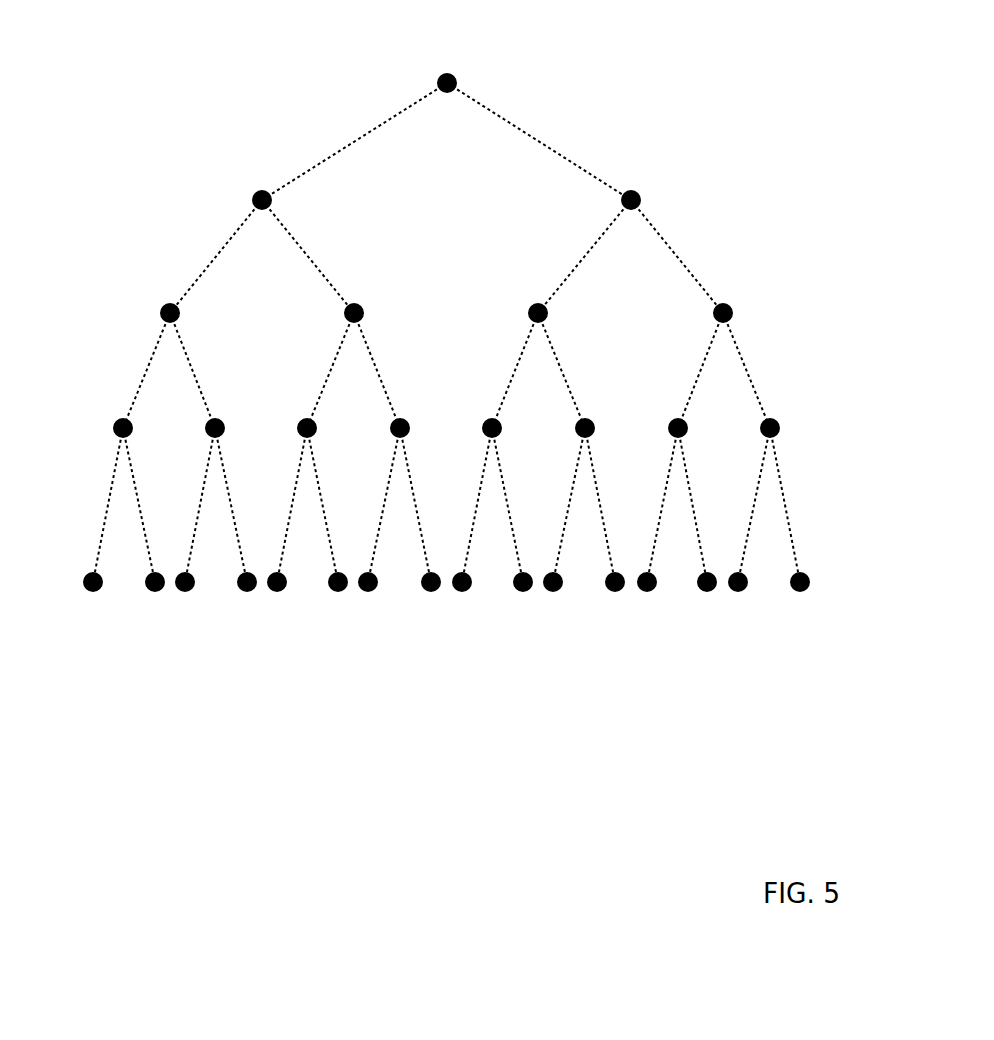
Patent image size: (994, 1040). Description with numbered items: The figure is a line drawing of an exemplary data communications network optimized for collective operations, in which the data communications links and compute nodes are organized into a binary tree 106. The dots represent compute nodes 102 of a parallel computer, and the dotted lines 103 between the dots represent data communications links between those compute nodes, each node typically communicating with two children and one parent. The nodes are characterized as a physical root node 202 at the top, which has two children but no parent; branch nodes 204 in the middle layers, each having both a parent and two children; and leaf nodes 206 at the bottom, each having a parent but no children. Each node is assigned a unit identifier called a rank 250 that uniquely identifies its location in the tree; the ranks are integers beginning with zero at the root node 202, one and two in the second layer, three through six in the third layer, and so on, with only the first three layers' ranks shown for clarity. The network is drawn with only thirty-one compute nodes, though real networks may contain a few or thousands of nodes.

The compute nodes 102 is at (523, 590).
The dotted lines 103 is at (363, 135).
The binary tree 106 is at (227, 683).
The physical root node 202 is at (465, 73).
The branch nodes 204 is at (829, 147).
The leaf nodes 206 is at (829, 616).
The rank 250 is at (593, 208).